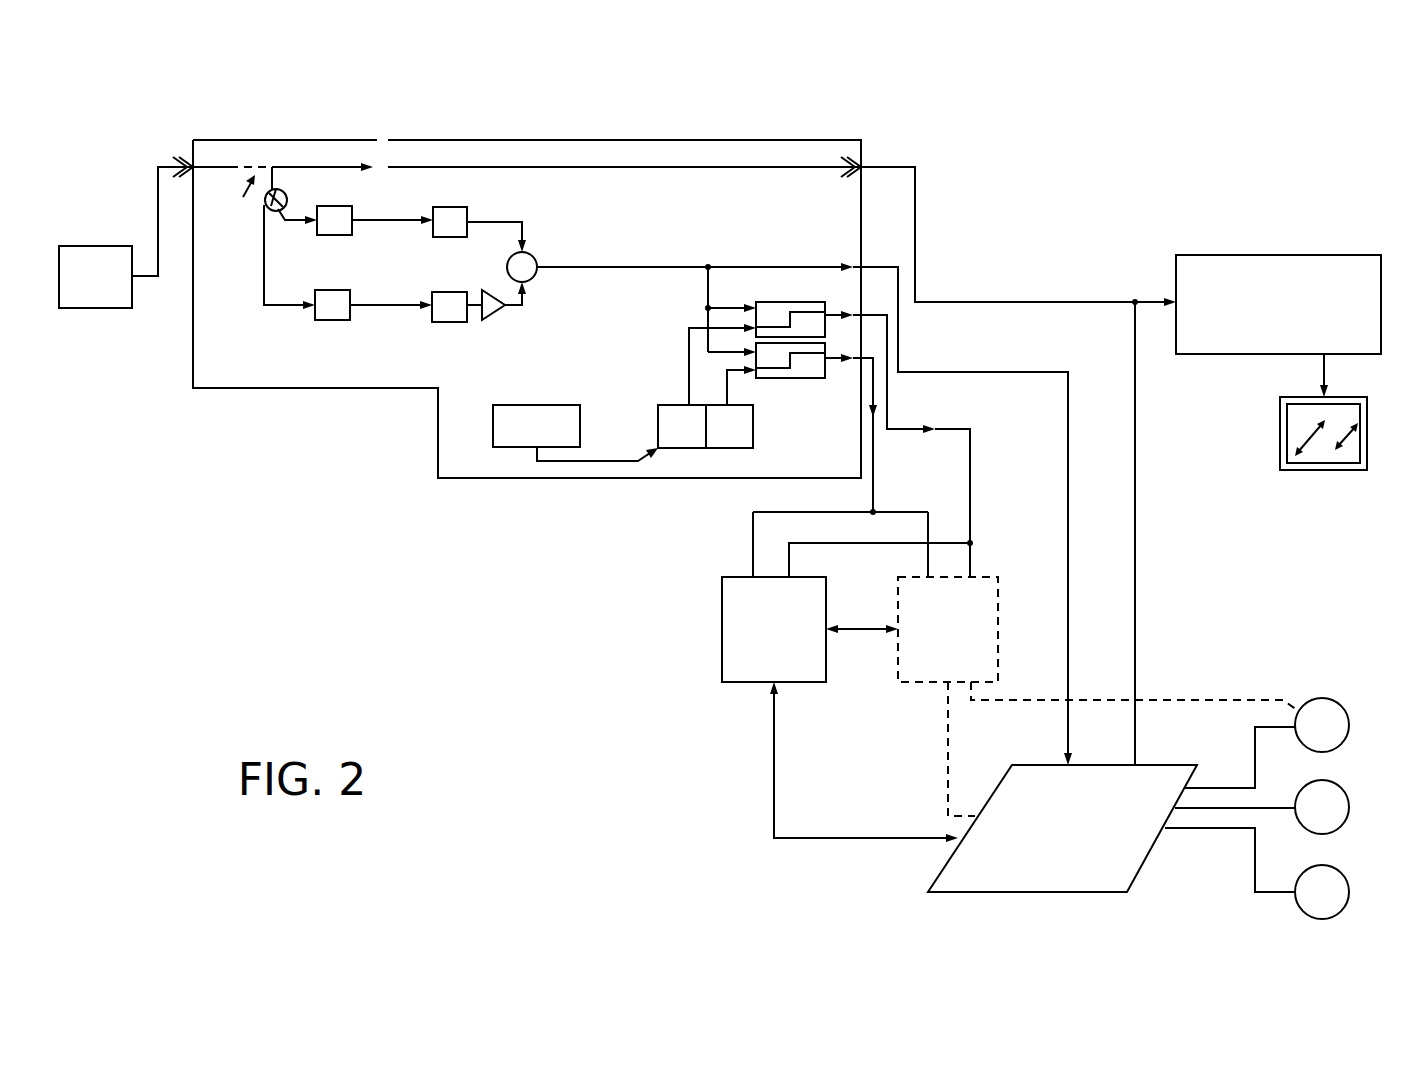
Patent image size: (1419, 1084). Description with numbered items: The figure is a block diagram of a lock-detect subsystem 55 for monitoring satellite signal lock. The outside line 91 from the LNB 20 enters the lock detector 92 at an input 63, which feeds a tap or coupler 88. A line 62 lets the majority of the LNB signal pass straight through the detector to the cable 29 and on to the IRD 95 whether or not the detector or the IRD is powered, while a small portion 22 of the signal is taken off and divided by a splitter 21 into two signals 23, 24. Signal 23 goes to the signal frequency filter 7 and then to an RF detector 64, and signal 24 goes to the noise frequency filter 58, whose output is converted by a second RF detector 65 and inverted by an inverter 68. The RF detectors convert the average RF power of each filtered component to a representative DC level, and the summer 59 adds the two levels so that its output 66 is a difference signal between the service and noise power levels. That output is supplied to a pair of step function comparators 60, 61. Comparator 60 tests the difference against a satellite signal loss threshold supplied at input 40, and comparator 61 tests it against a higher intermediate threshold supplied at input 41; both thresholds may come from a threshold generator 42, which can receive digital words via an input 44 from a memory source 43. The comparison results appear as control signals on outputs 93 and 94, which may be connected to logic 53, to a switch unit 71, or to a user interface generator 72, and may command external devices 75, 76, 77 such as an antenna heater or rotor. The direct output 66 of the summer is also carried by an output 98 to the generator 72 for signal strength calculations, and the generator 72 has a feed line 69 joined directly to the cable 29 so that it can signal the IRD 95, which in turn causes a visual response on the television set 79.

The LNB 20 is at (95, 277).
The outside line 91 is at (148, 276).
The lock detector 92 is at (578, 138).
The line 62 is at (708, 165).
The portion of the LNB signal 22 is at (281, 177).
The tap or coupler 88 is at (277, 167).
The lock-detect subsystem 55 is at (1000, 112).
The input 63 is at (236, 204).
The splitter 21 is at (262, 205).
The signal 24 is at (265, 245).
The signal 23 is at (298, 224).
The signal frequency filter 7 is at (345, 210).
The RF detector 64 is at (457, 218).
The noise frequency filter 58 is at (325, 318).
The second RF detector 65 is at (428, 318).
The inverter 68 is at (495, 310).
The summer 59 is at (537, 255).
The output signal 66 is at (645, 270).
The output 98 is at (797, 265).
The comparator 60 is at (773, 302).
The comparator 61 is at (807, 375).
The threshold input 40 is at (689, 362).
The threshold input 41 is at (727, 388).
The threshold generator 42 is at (688, 432).
The source 43 is at (552, 410).
The input 44 is at (604, 460).
The output 93 is at (904, 428).
The output 94 is at (875, 455).
The logic 53 is at (720, 640).
The switch unit 71 is at (910, 683).
The user interface generator 72 is at (1005, 893).
The feed line 69 is at (1137, 638).
The cable 29 is at (1038, 300).
The IRD 95 is at (1225, 345).
The television set 79 is at (1303, 470).
The external device 75 is at (1325, 698).
The external device 76 is at (1342, 785).
The external device 77 is at (1325, 918).